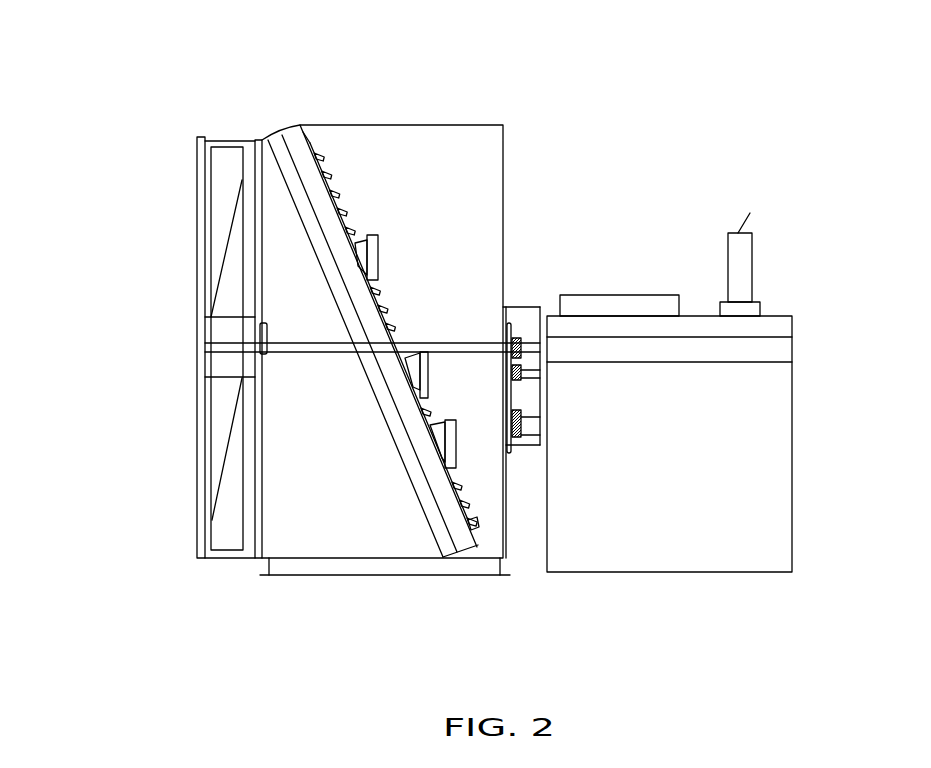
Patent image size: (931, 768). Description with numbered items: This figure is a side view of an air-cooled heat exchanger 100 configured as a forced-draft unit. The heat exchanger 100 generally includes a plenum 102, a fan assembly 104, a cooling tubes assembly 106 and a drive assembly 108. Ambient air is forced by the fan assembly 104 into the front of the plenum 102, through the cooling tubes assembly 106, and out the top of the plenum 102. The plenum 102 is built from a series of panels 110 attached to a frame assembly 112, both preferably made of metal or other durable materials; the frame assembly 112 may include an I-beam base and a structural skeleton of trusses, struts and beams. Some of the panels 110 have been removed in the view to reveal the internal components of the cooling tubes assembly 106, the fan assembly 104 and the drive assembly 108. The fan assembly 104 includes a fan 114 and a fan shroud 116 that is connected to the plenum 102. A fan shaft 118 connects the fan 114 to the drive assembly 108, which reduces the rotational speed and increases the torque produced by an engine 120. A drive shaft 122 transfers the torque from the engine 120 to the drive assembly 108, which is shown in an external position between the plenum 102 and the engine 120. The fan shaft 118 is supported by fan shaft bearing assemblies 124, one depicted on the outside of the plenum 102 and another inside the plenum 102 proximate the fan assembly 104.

The air-cooled heat exchanger 100 is at (620, 106).
The plenum 102 is at (426, 124).
The fan assembly 104 is at (152, 218).
The cooling tubes assembly 106 is at (322, 188).
The drive assembly 108 is at (522, 284).
The panels 110 is at (505, 187).
The frame assembly 112 is at (327, 575).
The fan 114 is at (222, 298).
The fan shroud 116 is at (238, 142).
The fan shaft 118 is at (303, 348).
The engine 120 is at (755, 440).
The drive shaft 122 is at (540, 447).
The fan shaft bearing assembly 124 is at (262, 336).